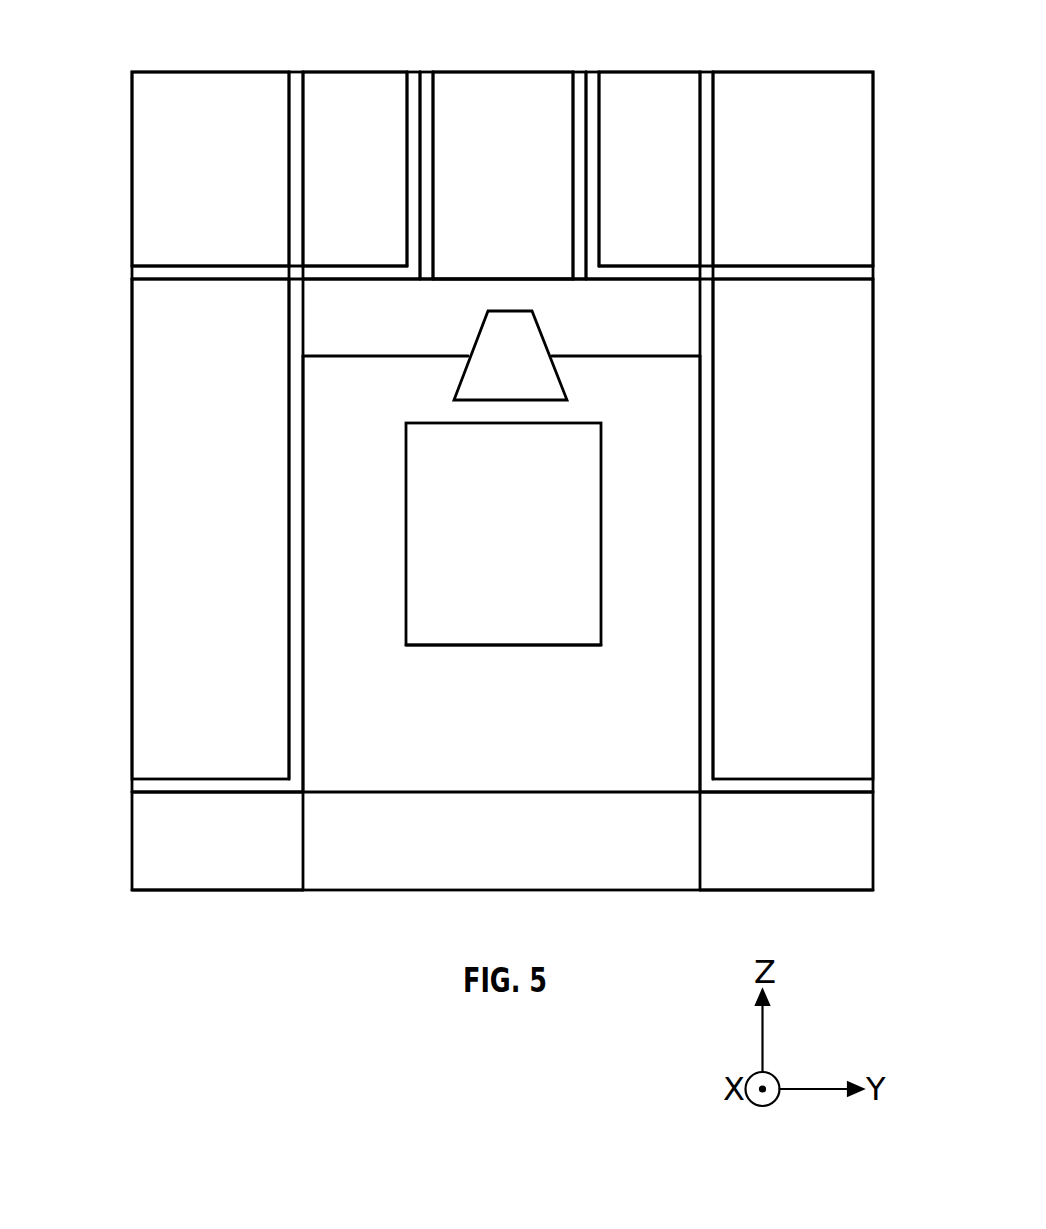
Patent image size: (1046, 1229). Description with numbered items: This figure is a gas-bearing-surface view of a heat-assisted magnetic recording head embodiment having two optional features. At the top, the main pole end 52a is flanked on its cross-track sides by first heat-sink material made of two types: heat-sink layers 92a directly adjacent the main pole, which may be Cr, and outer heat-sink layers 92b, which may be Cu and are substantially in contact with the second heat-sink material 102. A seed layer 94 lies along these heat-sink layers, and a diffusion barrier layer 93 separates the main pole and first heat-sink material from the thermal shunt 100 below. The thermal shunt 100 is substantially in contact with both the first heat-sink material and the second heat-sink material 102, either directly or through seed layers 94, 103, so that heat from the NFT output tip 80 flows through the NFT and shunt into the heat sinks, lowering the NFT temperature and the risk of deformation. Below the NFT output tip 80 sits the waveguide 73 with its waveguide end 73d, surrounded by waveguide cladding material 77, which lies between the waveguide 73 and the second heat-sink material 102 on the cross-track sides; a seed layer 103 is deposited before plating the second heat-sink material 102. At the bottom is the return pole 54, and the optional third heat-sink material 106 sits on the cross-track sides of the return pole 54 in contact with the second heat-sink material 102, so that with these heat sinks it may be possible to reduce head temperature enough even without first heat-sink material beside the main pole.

The return pole 54 is at (603, 880).
The third heat-sink material 106 is at (152, 830).
The second heat-sink material 102 is at (163, 450).
The heat-sink layers 92b is at (167, 143).
The heat-sink layers 92a is at (326, 97).
The seed layer 94 is at (413, 97).
The diffusion barrier layer 93 is at (427, 85).
The main pole end 52a is at (487, 87).
The thermal shunt 100 is at (668, 324).
The seed layer 103 is at (295, 479).
The waveguide cladding material 77 is at (343, 452).
The NFT output tip 80 is at (483, 368).
The waveguide 73 is at (472, 648).
The waveguide end 73d is at (507, 617).